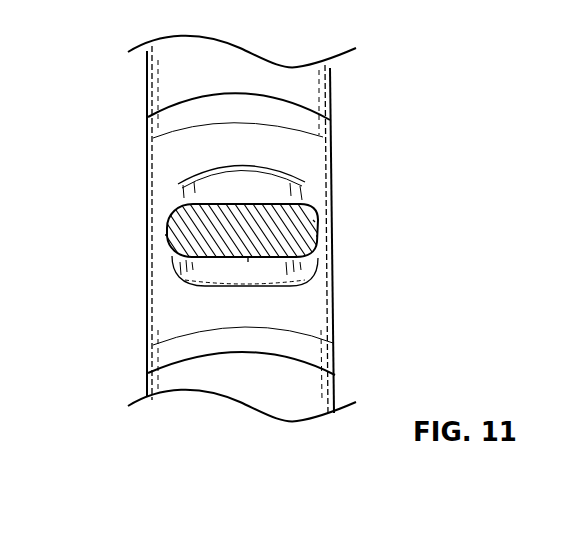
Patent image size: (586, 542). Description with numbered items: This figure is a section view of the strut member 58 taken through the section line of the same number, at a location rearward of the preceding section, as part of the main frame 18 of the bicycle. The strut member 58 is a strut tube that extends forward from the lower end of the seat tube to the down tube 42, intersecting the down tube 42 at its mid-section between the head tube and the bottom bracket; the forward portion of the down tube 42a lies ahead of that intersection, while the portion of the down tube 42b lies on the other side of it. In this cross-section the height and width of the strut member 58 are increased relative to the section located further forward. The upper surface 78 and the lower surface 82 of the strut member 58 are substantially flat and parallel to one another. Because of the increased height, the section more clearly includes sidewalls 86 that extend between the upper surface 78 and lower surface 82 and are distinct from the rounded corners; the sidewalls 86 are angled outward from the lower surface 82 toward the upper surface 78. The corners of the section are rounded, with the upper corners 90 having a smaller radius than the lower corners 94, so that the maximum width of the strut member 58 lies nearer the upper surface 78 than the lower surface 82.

The main frame 18 is at (478, 124).
The down tube 42 is at (328, 240).
The forward portion of the down tube 42a is at (328, 95).
The lower tube portion 42b is at (333, 356).
The strut member 58 is at (313, 190).
The upper surface 78 is at (243, 204).
The lower surface 82 is at (243, 258).
The sidewalls 86 is at (165, 235).
The upper corners 90 is at (170, 217).
The lower corners 94 is at (176, 253).